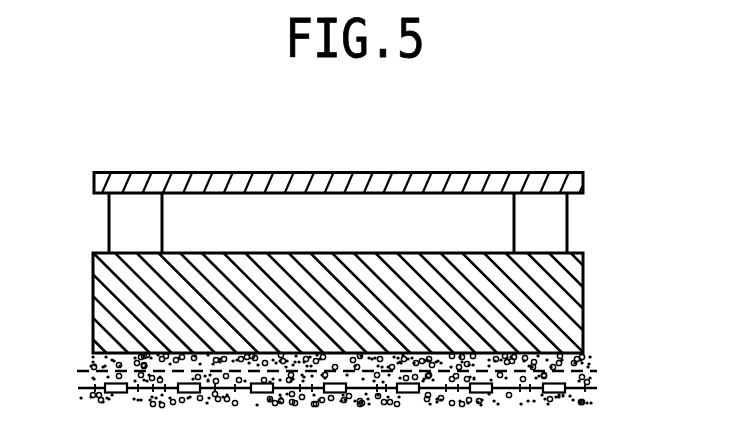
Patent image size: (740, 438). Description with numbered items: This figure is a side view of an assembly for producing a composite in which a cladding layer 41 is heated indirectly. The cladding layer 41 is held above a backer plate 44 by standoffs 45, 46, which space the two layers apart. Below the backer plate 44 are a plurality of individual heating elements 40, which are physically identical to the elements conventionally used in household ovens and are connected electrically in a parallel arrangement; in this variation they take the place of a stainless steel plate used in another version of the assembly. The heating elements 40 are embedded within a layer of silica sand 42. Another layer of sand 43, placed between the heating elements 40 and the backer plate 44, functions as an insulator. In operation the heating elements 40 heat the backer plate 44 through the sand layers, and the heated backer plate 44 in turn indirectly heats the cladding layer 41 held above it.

The heating elements 40 is at (122, 394).
The cladding layer 41 is at (365, 173).
The layer of silica sand 42 is at (527, 397).
The layer of sand 43 is at (570, 364).
The backer plate 44 is at (92, 300).
The standoff 45 is at (163, 213).
The standoff 46 is at (513, 215).